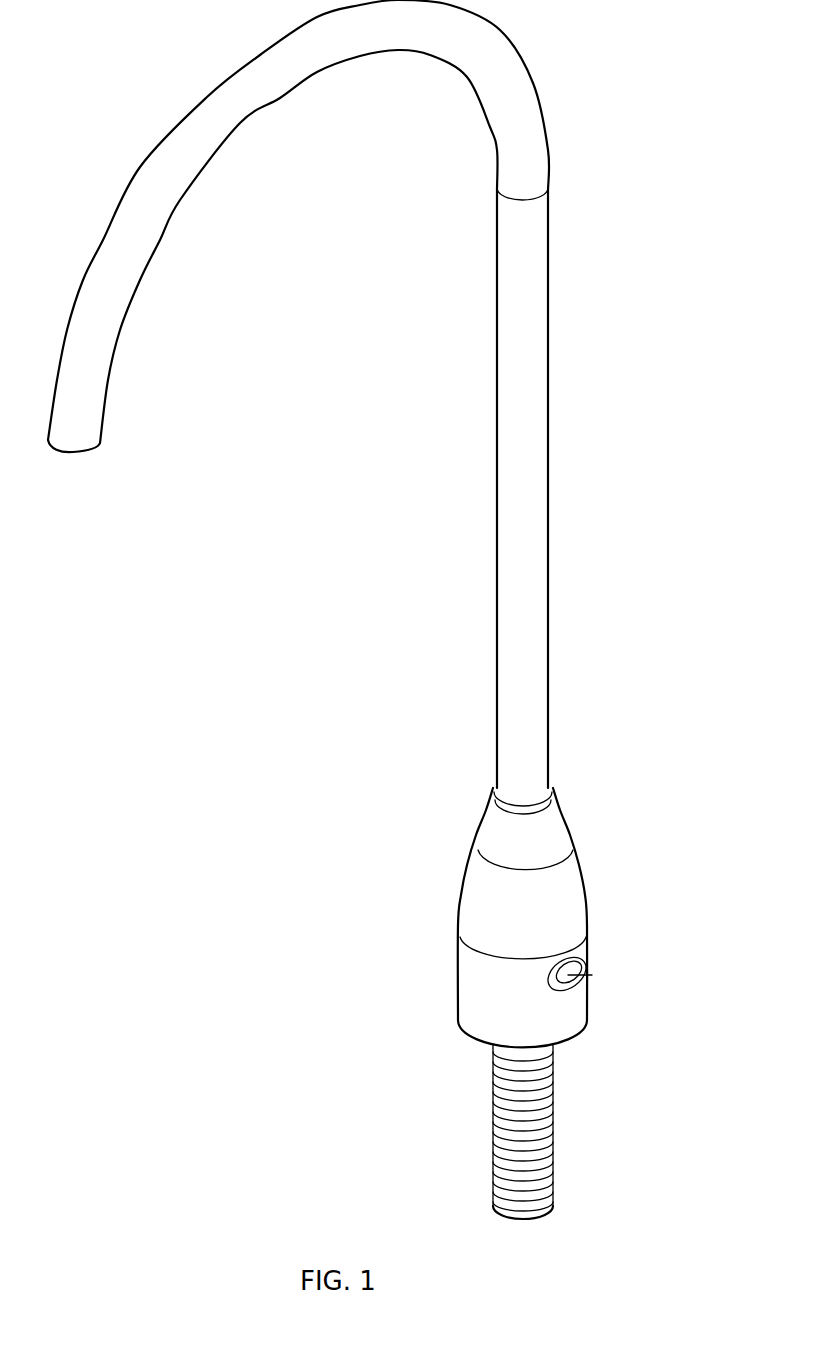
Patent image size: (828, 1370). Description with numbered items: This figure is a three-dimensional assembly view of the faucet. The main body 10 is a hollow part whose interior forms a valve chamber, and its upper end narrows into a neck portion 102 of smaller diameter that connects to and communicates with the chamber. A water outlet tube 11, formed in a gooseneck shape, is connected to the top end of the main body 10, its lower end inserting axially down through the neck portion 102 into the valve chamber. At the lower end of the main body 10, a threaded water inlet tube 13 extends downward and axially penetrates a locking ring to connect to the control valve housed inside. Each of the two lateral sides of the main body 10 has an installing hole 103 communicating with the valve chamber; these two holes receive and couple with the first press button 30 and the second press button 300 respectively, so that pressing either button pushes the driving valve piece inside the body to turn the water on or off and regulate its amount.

The main body 10 is at (458, 1005).
The water outlet tube 11 is at (213, 103).
The water inlet tube 13 is at (545, 1165).
The first press button 30 is at (457, 912).
The neck portion 102 is at (494, 790).
The installing hole 103 is at (578, 955).
The second press button 300 is at (582, 975).